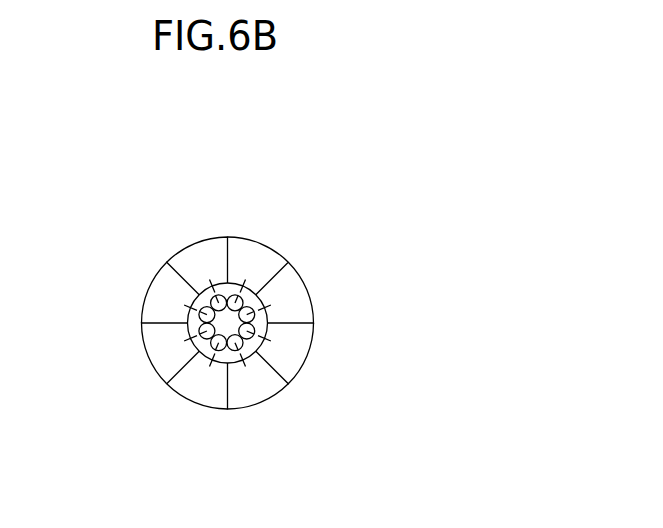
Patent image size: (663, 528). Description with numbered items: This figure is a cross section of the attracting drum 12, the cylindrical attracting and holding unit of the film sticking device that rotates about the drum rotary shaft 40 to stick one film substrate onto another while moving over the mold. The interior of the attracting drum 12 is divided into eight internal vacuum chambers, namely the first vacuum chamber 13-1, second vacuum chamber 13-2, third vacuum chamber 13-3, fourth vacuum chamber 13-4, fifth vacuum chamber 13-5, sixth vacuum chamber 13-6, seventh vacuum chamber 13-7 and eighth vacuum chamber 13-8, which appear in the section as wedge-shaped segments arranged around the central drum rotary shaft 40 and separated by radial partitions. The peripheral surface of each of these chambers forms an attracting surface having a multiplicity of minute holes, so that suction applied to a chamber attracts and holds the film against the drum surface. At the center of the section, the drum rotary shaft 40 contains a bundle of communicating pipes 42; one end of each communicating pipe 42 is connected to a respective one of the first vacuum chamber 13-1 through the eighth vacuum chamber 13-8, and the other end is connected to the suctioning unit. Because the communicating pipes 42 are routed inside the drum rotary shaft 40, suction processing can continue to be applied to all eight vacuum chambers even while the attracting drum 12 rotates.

The attracting drum 12 is at (291, 114).
The first vacuum chamber 13-1 is at (212, 252).
The second vacuum chamber 13-2 is at (263, 252).
The third vacuum chamber 13-3 is at (298, 305).
The fourth vacuum chamber 13-4 is at (297, 339).
The fifth vacuum chamber 13-5 is at (248, 390).
The sixth vacuum chamber 13-6 is at (193, 383).
The seventh vacuum chamber 13-7 is at (155, 356).
The eighth vacuum chamber 13-8 is at (162, 289).
The drum rotary shaft 40 is at (258, 352).
The communicating pipes 42 is at (250, 355).